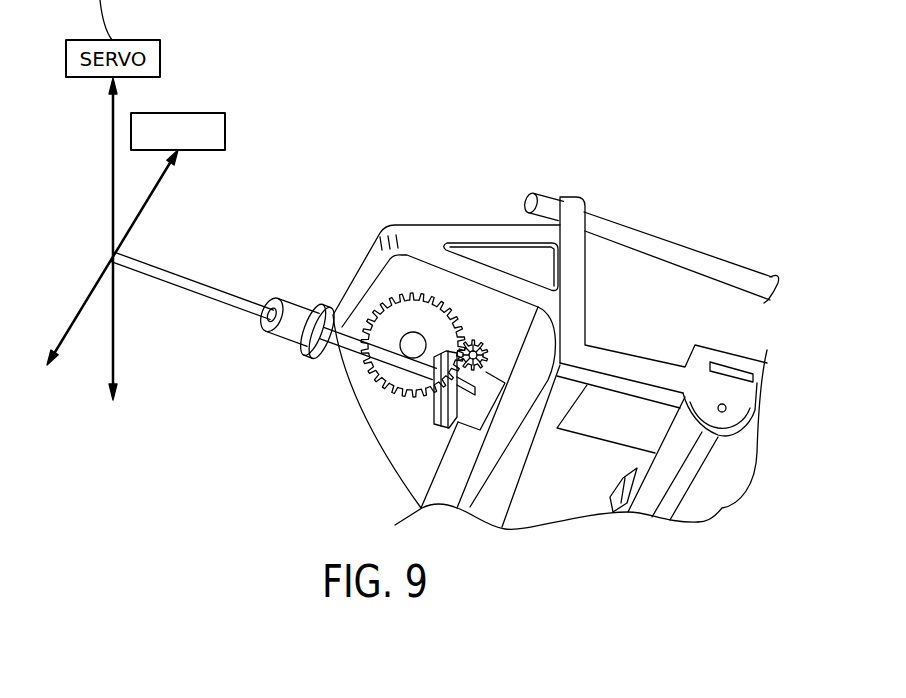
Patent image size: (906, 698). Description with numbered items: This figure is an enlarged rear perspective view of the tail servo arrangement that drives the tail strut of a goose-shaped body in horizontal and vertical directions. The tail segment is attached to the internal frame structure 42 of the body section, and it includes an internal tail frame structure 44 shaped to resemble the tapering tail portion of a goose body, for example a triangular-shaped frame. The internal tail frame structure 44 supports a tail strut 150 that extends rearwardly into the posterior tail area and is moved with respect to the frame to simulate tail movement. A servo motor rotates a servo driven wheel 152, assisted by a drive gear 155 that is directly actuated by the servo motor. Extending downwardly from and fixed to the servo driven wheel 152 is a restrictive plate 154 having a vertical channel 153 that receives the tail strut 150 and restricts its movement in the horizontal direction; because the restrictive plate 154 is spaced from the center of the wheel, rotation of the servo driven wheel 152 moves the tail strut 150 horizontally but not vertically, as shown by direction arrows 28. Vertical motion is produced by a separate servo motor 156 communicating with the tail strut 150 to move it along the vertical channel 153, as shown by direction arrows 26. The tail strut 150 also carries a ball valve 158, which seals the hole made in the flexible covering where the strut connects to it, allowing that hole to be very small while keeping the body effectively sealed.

The direction arrows 26 is at (112, 208).
The direction arrows 28 is at (86, 296).
The internal frame structure 42 is at (642, 392).
The internal tail frame structure 44 is at (510, 235).
The tail strut 150 is at (195, 284).
The servo driven wheel 152 is at (407, 318).
The vertical channel 153 is at (437, 402).
The restrictive plate 154 is at (455, 423).
The drive gear 155 is at (467, 337).
The servo motor 156 is at (226, 131).
The ball valve 158 is at (287, 338).